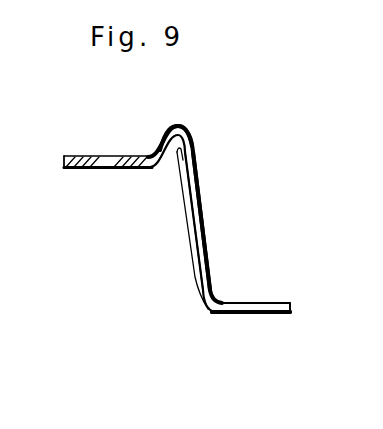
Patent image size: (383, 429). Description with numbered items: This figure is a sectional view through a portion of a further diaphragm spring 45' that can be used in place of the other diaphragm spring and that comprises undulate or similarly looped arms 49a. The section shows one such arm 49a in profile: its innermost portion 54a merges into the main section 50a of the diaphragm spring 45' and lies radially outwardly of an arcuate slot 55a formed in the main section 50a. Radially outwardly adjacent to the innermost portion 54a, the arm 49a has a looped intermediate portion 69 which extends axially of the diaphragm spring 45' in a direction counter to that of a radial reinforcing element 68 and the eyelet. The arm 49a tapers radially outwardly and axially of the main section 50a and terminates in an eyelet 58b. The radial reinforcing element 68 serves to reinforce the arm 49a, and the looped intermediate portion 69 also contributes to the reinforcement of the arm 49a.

The diaphragm spring 45' is at (219, 203).
The arm 49a is at (197, 222).
The main section 50a is at (70, 169).
The innermost portion 54a is at (128, 155).
The arcuate slot 55a is at (107, 167).
The eyelet 58b is at (233, 307).
The radial reinforcing element 68 is at (185, 230).
The looped intermediate portion 69 is at (181, 122).